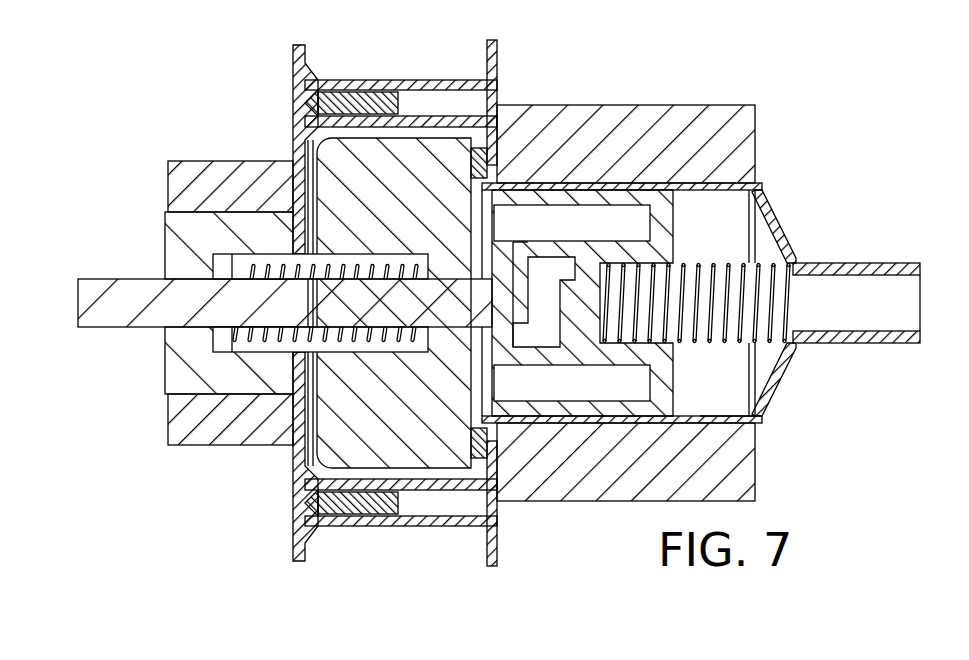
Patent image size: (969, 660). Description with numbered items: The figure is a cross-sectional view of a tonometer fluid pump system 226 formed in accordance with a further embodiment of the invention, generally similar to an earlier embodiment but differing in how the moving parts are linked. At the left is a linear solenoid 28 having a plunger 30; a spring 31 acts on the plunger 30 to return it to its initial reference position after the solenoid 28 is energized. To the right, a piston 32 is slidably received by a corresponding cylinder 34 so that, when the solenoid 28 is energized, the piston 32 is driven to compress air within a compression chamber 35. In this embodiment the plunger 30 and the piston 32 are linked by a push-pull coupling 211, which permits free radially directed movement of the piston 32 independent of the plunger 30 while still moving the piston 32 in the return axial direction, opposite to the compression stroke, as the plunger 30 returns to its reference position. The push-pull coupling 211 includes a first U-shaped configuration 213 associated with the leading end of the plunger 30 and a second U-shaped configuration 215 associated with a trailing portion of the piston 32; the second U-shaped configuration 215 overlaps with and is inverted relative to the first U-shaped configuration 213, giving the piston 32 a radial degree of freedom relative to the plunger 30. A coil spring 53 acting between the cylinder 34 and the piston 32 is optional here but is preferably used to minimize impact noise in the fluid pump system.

The tonometer fluid pump system 226 is at (782, 75).
The linear solenoid 28 is at (166, 240).
The plunger 30 is at (133, 330).
The spring 31 is at (323, 264).
The piston 32 is at (662, 245).
The cylinder 34 is at (730, 415).
The compression chamber 35 is at (740, 375).
The spring 53 is at (770, 315).
The push-pull coupling 211 is at (566, 232).
The first U-shaped configuration 213 is at (557, 327).
The second U-shaped configuration 215 is at (530, 261).